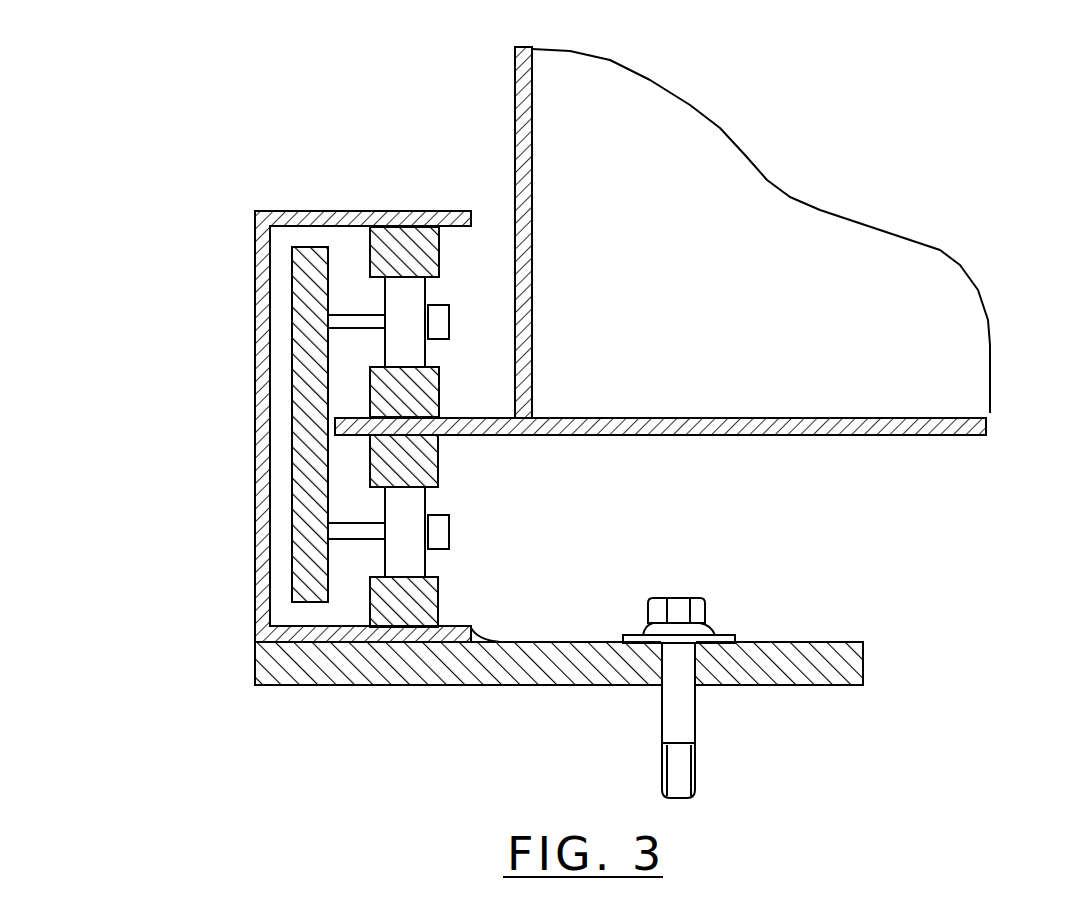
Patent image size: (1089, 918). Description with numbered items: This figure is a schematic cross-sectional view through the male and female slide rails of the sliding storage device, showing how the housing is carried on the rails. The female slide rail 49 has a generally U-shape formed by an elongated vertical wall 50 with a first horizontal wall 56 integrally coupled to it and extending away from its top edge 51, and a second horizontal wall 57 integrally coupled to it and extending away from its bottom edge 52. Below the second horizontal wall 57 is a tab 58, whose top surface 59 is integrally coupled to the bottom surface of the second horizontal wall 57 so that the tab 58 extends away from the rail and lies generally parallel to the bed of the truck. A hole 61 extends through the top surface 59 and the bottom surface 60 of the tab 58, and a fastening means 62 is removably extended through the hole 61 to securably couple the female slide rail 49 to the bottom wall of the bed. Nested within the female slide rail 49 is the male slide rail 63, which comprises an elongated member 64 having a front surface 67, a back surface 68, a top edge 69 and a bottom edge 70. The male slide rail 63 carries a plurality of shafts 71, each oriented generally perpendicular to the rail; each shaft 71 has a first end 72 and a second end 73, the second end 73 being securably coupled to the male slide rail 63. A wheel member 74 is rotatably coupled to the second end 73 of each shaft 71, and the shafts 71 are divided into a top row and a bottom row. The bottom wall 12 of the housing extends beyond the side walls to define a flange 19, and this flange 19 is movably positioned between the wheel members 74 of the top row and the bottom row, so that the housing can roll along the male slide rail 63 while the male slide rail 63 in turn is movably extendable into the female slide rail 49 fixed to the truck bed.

The bottom wall 12 is at (937, 435).
The flange 19 is at (472, 417).
The female slide rail 49 is at (252, 480).
The elongated vertical wall 50 is at (277, 371).
The top edge 51 is at (252, 210).
The bottom edge 52 is at (252, 642).
The first horizontal wall 56 is at (424, 228).
The second horizontal wall 57 is at (488, 684).
The tab 58 is at (578, 684).
The top surface 59 is at (807, 643).
The bottom surface 60 is at (847, 685).
The hole 61 is at (729, 737).
The fastening means 62 is at (695, 783).
The male slide rail 63 is at (292, 210).
The elongated member 64 is at (218, 336).
The front surface 67 is at (328, 510).
The back surface 68 is at (292, 287).
The top edge 69 is at (320, 247).
The bottom edge 70 is at (297, 605).
The shaft 71 is at (449, 537).
The first end 72 is at (330, 543).
The second end 73 is at (430, 547).
The wheel member 74 is at (438, 450).